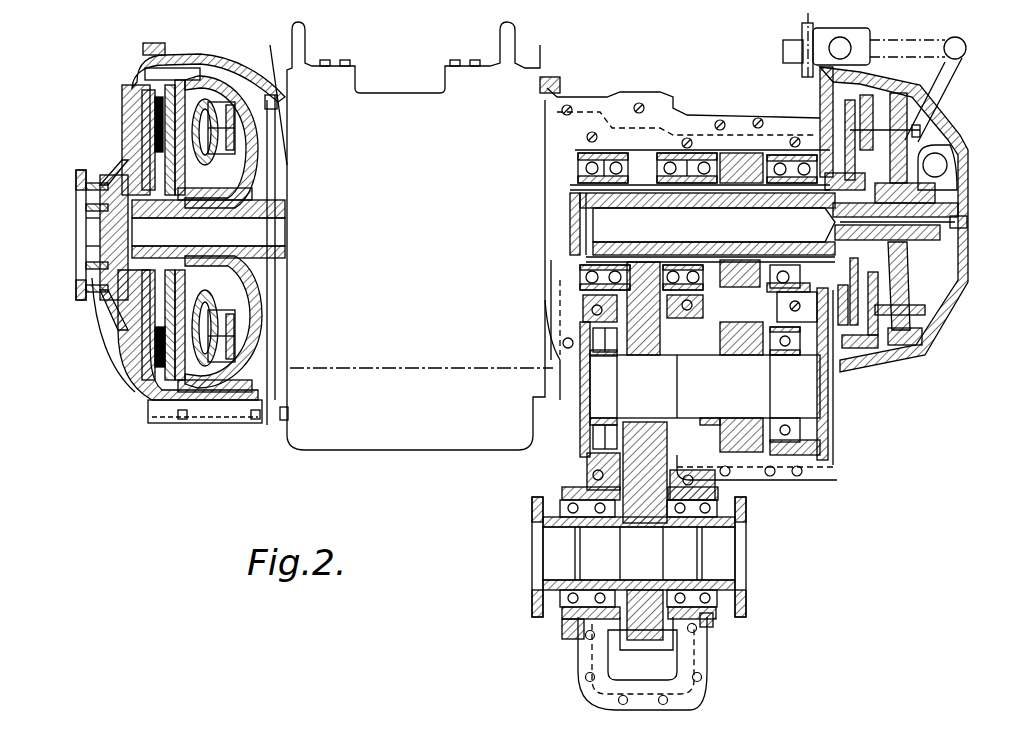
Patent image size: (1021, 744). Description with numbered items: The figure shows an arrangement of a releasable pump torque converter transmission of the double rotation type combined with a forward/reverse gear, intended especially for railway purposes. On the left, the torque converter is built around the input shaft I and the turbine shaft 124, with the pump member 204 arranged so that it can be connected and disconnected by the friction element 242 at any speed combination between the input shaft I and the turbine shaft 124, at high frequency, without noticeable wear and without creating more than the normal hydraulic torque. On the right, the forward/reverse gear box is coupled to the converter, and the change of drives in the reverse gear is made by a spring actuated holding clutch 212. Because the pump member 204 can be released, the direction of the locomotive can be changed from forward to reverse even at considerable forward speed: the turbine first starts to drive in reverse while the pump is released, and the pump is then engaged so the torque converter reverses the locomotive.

The turbine shaft 124 is at (270, 230).
The pump member 204 is at (183, 130).
The friction element 242 is at (152, 368).
The spring actuated holding clutch 212 is at (903, 160).
The input shaft I is at (82, 190).